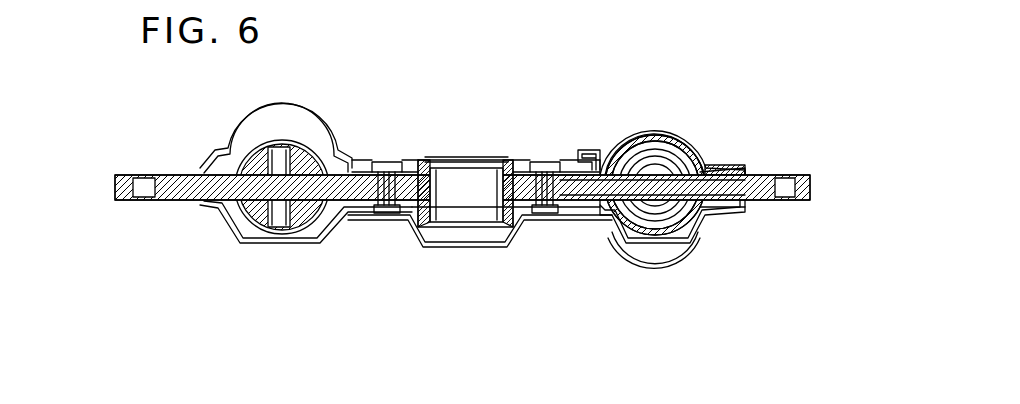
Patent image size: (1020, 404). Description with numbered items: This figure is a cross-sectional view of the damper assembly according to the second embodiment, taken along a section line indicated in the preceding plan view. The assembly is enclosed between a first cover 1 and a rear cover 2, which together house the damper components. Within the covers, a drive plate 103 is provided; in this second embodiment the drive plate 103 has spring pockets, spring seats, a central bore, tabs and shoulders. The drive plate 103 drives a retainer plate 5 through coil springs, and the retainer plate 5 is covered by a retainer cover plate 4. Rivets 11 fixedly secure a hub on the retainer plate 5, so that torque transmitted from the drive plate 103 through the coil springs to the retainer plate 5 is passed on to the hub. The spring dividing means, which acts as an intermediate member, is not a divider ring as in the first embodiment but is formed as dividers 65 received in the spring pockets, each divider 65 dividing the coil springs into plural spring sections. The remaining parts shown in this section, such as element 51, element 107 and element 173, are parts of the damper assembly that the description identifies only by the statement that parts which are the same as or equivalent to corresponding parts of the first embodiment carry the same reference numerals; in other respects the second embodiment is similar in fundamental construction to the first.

The first cover 1 is at (695, 241).
The rear cover 2 is at (657, 134).
The retainer cover plate 4 is at (585, 152).
The retainer plate 5 is at (583, 220).
The rivets 11 is at (540, 222).
The cover flange portion 51 is at (632, 242).
The dividers 65 is at (284, 244).
The drive plate 103 is at (722, 168).
The hub block 107 is at (510, 230).
The top plate 173 is at (480, 158).